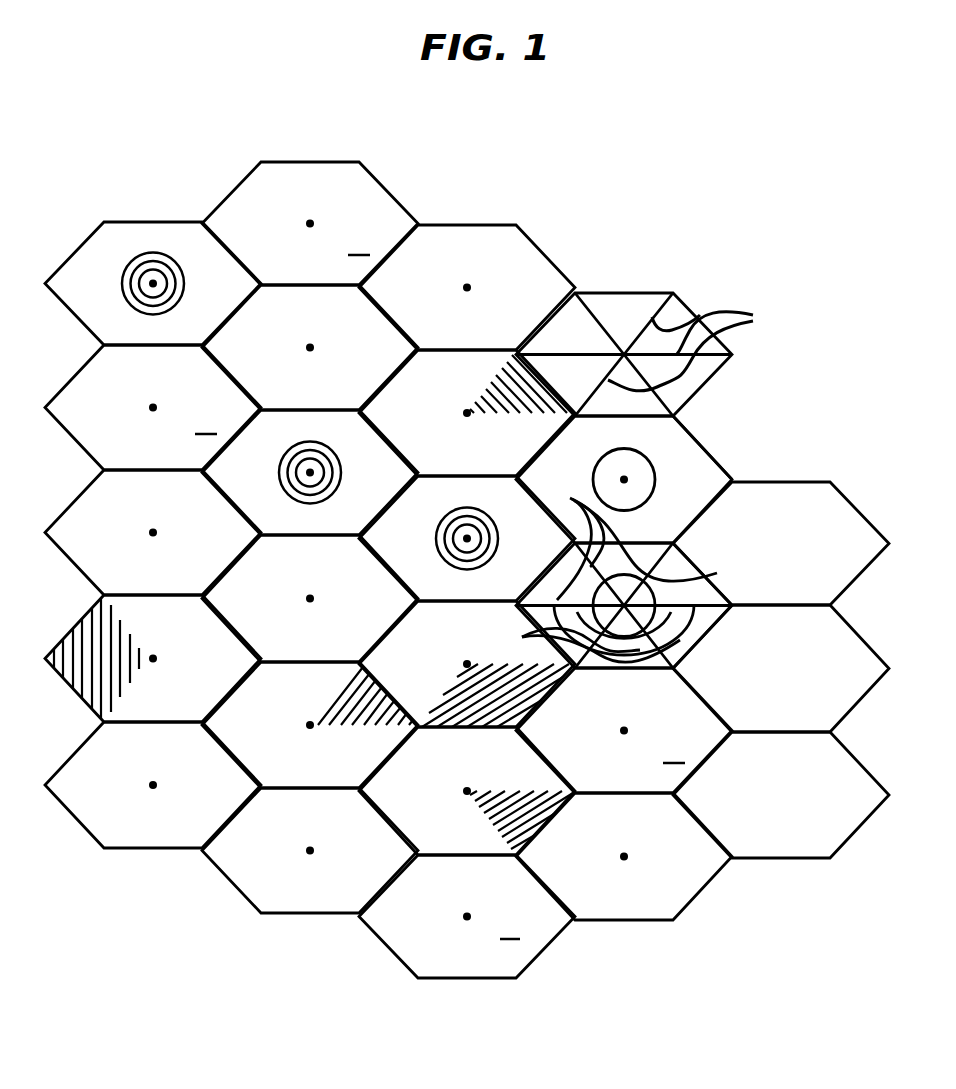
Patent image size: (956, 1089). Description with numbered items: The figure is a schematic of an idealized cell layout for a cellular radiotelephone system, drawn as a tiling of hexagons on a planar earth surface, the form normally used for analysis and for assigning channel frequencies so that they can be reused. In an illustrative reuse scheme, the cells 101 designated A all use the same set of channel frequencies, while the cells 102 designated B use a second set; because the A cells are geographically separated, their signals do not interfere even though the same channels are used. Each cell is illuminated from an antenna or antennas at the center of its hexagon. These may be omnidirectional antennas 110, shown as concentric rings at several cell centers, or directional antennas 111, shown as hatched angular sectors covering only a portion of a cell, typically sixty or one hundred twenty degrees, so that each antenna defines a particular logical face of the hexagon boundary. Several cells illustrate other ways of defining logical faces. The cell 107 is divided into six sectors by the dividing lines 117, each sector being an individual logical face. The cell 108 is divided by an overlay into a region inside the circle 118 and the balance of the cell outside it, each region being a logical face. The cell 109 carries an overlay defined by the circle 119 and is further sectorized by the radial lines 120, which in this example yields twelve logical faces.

The cells designated A 101 is at (68, 432).
The cells designated B 102 is at (386, 188).
The cell divided into six sectors 107 is at (676, 298).
The cell divided into two regions by an overlay 108 is at (683, 428).
The cell with overlay and radial sectorization 109 is at (685, 560).
The omnidirectional antennas 110 is at (163, 285).
The directional antennas 111 is at (158, 659).
The dividing lines 117 is at (701, 348).
The circle 118 is at (730, 448).
The circle 119 is at (640, 574).
The radial lines 120 is at (599, 556).